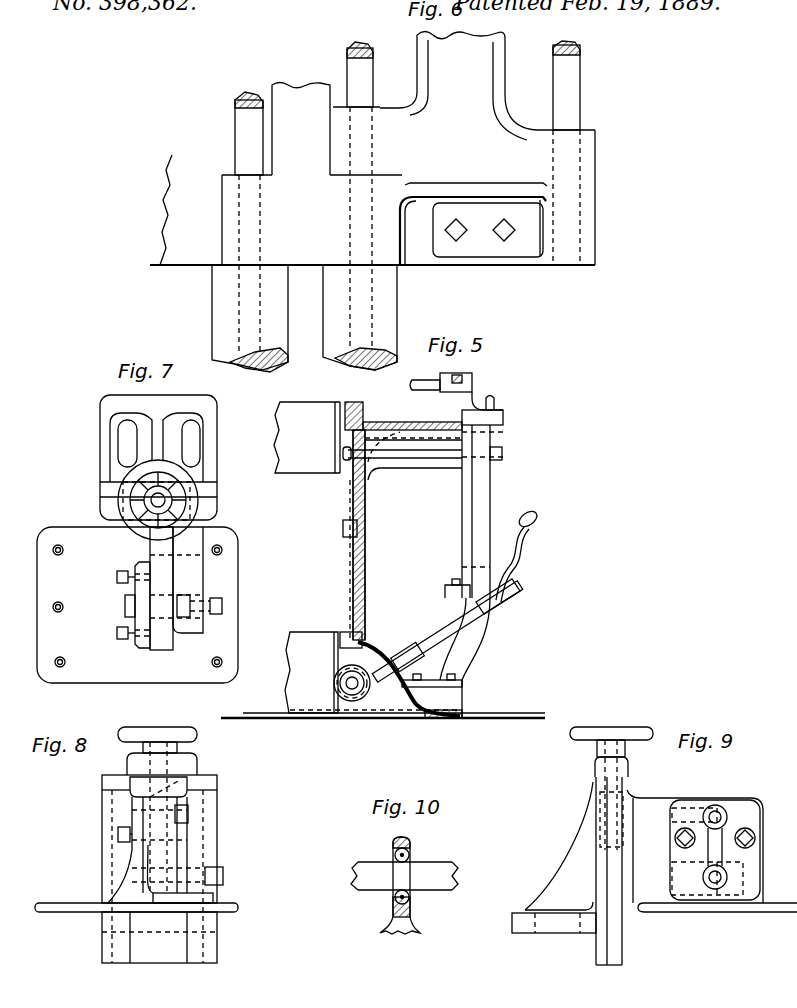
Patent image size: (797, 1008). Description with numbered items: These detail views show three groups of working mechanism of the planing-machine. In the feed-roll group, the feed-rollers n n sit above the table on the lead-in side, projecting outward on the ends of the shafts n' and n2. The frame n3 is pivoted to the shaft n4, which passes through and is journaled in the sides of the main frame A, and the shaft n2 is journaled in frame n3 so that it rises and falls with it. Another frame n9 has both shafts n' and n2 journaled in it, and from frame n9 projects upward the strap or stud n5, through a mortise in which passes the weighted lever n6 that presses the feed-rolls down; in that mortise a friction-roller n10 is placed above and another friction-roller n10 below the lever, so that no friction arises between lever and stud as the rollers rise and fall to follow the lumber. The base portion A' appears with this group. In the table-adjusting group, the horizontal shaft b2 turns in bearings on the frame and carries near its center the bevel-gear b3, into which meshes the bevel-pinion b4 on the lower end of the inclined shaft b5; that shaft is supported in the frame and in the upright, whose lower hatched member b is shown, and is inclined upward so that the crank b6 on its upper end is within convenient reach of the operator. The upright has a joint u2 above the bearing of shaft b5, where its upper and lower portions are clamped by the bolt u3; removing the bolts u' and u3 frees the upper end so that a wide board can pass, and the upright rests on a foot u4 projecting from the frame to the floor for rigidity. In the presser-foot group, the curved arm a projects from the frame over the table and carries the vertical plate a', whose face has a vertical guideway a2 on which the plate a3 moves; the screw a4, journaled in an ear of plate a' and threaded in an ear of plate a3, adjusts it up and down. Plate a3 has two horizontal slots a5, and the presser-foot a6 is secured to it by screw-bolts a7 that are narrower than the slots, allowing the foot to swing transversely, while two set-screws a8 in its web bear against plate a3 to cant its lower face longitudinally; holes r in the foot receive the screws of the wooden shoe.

In FIG. 6, the feed-roller n is at (304, 318).
In FIG. 6, the shaft n' is at (249, 223).
In FIG. 6, the shaft n2 is at (360, 196).
In FIG. 6, the frame n3 is at (458, 89).
In FIG. 6, the shaft n4 is at (566, 153).
In FIG. 6, the strap or stud n5 is at (402, 245).
In FIG. 10, the strap or stud n5 is at (411, 842).
In FIG. 10, the lever n6 is at (404, 876).
In FIG. 6, the frame n9 is at (301, 129).
In FIG. 10, the friction-roller n10 is at (395, 855).
In FIG. 5, the frame A is at (307, 557).
In FIG. 6, the base plate A' is at (552, 276).
In FIG. 5, the bolt u' is at (402, 444).
In FIG. 5, the joint u2 is at (456, 485).
In FIG. 5, the bolt u3 is at (452, 582).
In FIG. 5, the foot u4 is at (446, 658).
In FIG. 5, the upright bar b is at (350, 572).
In FIG. 5, the horizontal shaft b2 is at (336, 695).
In FIG. 5, the bevel-gear b3 is at (340, 660).
In FIG. 5, the bevel-pinion b4 is at (382, 648).
In FIG. 5, the inclined shaft b5 is at (446, 626).
In FIG. 5, the crank b6 is at (520, 545).
In FIG. 7, the bolt hole r is at (64, 550).
In FIG. 9, the curved arm a is at (554, 857).
In FIG. 8, the vertical plate a' is at (167, 869).
In FIG. 9, the vertical plate a' is at (598, 871).
In FIG. 8, the vertical guideway a2 is at (159, 937).
In FIG. 9, the vertical guideway a2 is at (622, 941).
In FIG. 8, the plate a3 is at (187, 782).
In FIG. 9, the plate a3 is at (695, 846).
In FIG. 9, the screw a4 is at (622, 784).
In FIG. 9, the horizontal slot a5 is at (675, 840).
In FIG. 7, the presser-foot a6 is at (137, 605).
In FIG. 8, the presser-foot a6 is at (72, 903).
In FIG. 9, the presser-foot a6 is at (740, 912).
In FIG. 7, the screw-bolt a7 is at (184, 595).
In FIG. 8, the screw-bolt a7 is at (188, 823).
In FIG. 7, the set-screw a8 is at (117, 574).
In FIG. 8, the set-screw a8 is at (118, 836).
In FIG. 9, the set-screw a8 is at (755, 841).